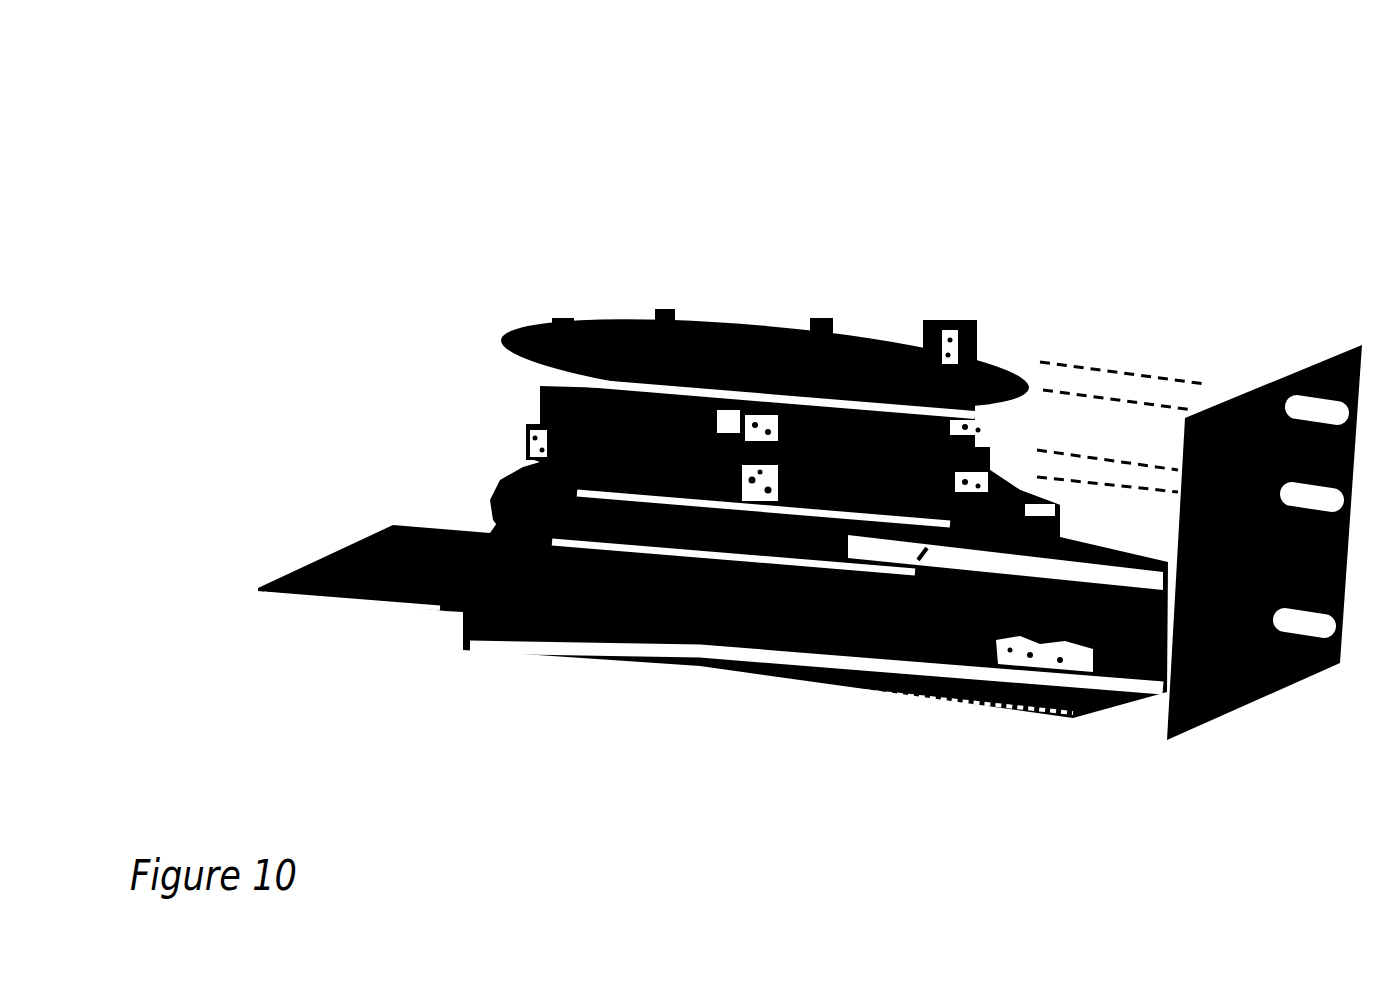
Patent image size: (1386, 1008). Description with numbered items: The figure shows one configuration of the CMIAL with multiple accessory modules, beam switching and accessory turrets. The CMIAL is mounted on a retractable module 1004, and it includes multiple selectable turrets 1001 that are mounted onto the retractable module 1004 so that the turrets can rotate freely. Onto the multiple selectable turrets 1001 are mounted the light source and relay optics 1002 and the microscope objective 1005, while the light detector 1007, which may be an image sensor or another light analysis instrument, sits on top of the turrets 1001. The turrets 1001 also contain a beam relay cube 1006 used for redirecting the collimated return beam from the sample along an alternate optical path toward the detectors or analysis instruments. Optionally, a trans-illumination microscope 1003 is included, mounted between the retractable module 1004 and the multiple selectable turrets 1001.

The multiple selectable turrets 1001 is at (562, 381).
The light source and relay optics 1002 is at (302, 394).
The trans-illumination microscope 1003 is at (610, 582).
The retractable module 1004 is at (1167, 591).
The microscope objective 1005 is at (908, 712).
The beam relay cube 1006 is at (1126, 335).
The light detector 1007 is at (786, 185).